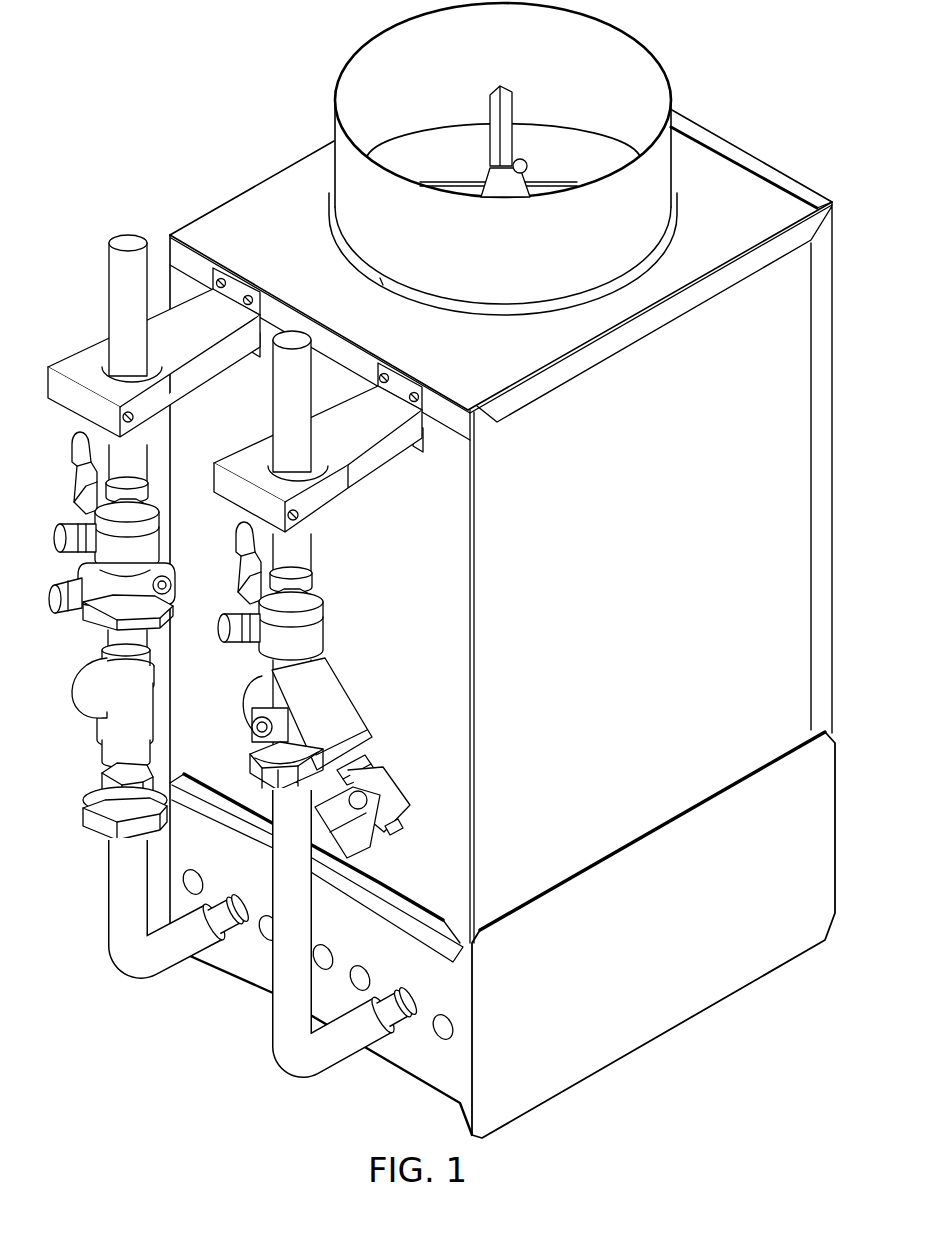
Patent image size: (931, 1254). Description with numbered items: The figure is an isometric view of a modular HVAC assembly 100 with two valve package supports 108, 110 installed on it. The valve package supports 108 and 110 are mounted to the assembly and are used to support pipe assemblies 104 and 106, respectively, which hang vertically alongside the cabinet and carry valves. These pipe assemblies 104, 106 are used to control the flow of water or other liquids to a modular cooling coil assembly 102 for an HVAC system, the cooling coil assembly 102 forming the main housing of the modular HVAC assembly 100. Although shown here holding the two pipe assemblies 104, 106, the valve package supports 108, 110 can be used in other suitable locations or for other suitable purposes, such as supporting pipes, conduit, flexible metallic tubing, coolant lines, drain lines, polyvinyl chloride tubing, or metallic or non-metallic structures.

The modular HVAC assembly 100 is at (203, 63).
The modular cooling coil assembly 102 is at (662, 607).
The pipe assembly 104 is at (107, 905).
The pipe assembly 106 is at (272, 1033).
The valve package support 108 is at (78, 327).
The valve package support 110 is at (366, 521).